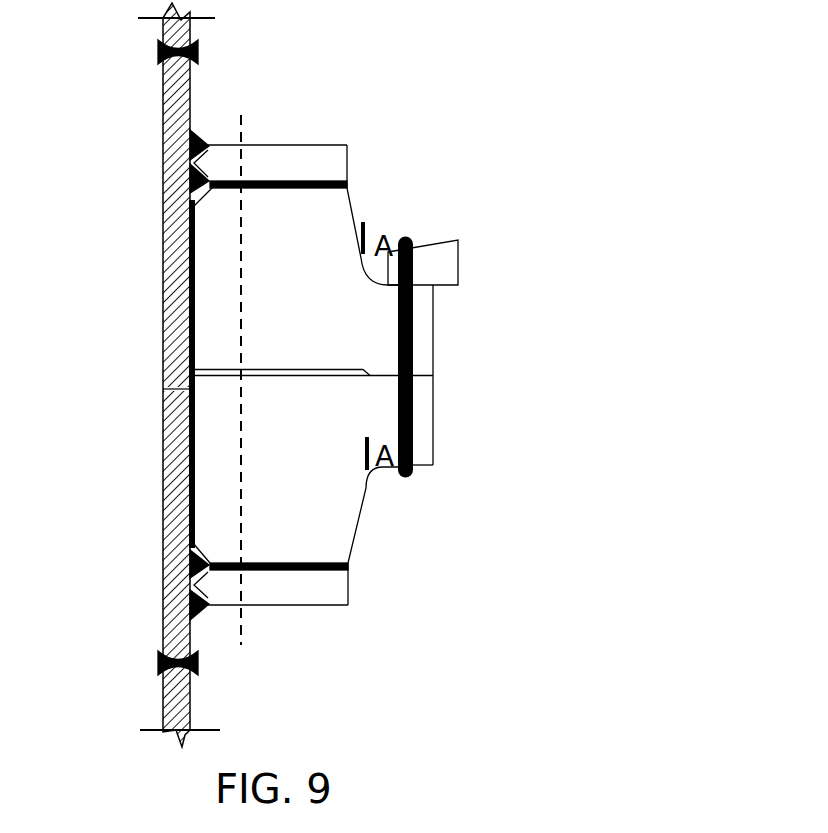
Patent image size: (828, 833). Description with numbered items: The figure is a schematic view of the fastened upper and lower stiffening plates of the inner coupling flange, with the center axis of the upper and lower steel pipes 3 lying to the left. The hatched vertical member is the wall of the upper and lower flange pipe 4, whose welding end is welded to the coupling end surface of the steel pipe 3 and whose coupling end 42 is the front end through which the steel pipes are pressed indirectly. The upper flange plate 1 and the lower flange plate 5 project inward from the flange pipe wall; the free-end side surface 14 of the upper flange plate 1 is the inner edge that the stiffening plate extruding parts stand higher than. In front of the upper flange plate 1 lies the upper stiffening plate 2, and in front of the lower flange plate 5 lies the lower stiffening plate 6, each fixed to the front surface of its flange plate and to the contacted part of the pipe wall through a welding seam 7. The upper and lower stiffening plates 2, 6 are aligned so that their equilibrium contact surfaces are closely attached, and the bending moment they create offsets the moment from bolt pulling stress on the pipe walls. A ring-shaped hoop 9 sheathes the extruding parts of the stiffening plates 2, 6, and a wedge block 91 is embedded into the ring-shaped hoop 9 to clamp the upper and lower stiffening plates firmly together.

The upper flange plate 1 is at (331, 144).
The free-end side surface 14 is at (352, 164).
The upper stiffening plate 2 is at (217, 294).
The upper and lower steel pipes 3 is at (192, 26).
The upper and lower flange pipe 4 is at (163, 196).
The coupling end 42 is at (163, 412).
The lower flange plate 5 is at (317, 596).
The lower stiffening plate 6 is at (217, 498).
The welding seam 7 is at (200, 268).
The ring-shaped hoop 9 is at (413, 440).
The wedge block 91 is at (466, 269).